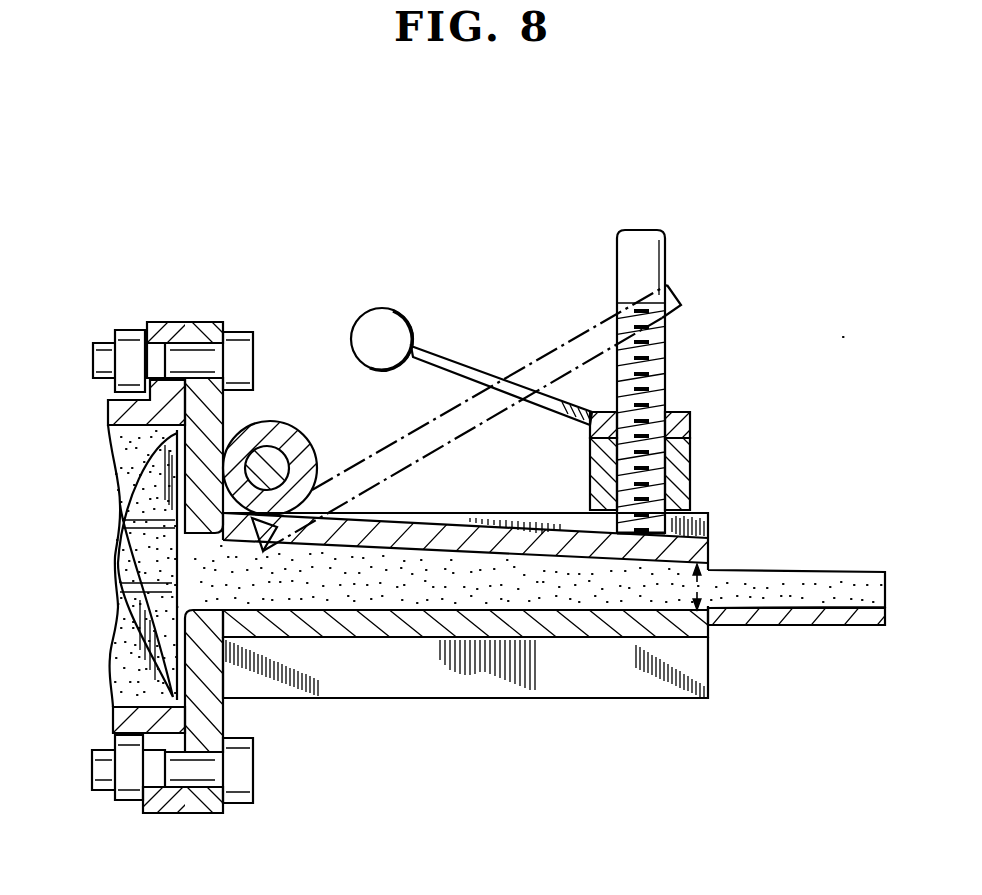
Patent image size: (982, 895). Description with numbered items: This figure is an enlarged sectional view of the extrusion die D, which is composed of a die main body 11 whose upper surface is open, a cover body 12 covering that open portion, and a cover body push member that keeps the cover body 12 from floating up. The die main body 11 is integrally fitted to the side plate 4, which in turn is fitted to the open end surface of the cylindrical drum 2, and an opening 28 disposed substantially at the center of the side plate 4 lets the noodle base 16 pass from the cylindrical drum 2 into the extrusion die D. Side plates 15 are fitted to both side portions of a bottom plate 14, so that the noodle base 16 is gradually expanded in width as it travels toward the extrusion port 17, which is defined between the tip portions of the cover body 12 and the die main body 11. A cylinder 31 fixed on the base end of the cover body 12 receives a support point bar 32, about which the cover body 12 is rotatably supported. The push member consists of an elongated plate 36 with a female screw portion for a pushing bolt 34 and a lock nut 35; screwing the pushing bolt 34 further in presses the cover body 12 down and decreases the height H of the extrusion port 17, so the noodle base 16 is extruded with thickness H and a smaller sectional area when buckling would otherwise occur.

The cylindrical drum 2 is at (125, 721).
The side plate 4 is at (192, 322).
The die main body 11 is at (473, 663).
The cover body 12 is at (437, 530).
The bottom plate 14 is at (409, 632).
The side plate 15 is at (513, 518).
The noodle base 16 is at (822, 582).
The extrusion port 17 is at (703, 593).
The opening 28 is at (200, 573).
The cylinder 31 is at (295, 445).
The support point bar 32 is at (265, 450).
The pushing bolt 34 is at (660, 358).
The lock nut 35 is at (690, 421).
The elongated plate 36 is at (686, 477).
The extrusion die D is at (372, 405).
The height of the extrusion port H is at (702, 582).